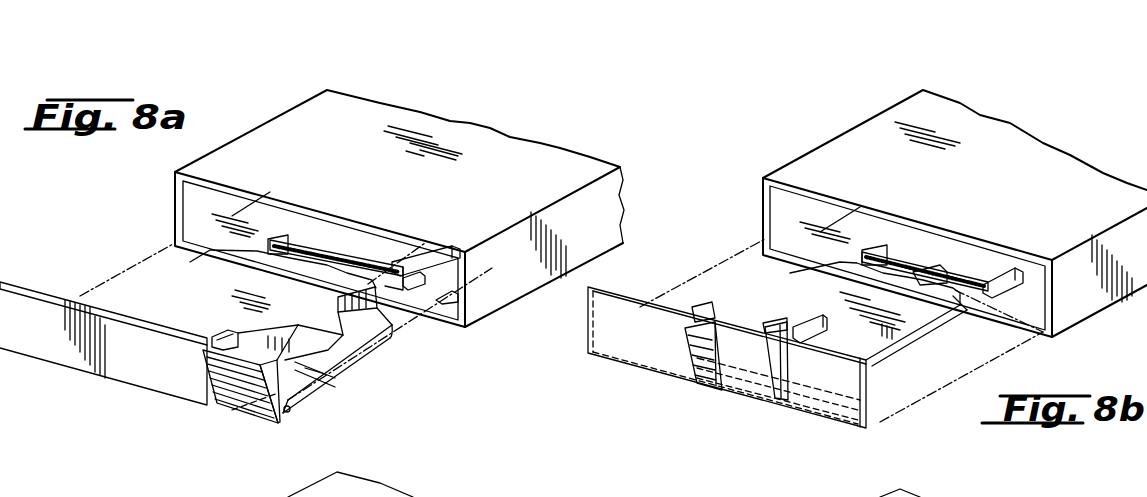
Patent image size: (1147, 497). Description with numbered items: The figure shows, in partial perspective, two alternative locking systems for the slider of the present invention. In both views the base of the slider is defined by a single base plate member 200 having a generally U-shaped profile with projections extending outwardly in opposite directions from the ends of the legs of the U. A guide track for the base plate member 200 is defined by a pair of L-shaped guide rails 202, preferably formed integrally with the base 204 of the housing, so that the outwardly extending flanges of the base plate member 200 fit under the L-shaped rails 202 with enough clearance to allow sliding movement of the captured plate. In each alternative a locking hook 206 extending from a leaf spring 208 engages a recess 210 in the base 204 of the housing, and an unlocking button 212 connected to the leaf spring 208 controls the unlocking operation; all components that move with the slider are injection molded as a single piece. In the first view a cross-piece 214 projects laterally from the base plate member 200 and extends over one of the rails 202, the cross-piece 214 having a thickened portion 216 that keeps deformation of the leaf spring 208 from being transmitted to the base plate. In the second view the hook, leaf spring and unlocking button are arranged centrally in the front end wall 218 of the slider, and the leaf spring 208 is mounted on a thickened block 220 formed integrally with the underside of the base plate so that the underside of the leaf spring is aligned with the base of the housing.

In FIG. 8A, the base plate member 200 is at (360, 250).
In FIG. 8B, the base plate member 200 is at (914, 240).
In FIG. 8A, the L-shaped guide rails 202 is at (277, 241).
In FIG. 8B, the L-shaped guide rails 202 is at (1005, 268).
In FIG. 8A, the base of the housing 204 is at (210, 236).
In FIG. 8B, the base of the housing 204 is at (795, 242).
In FIG. 8A, the locking hook 206 is at (292, 411).
In FIG. 8B, the locking hook 206 is at (776, 398).
In FIG. 8A, the leaf spring 208 is at (328, 365).
In FIG. 8B, the leaf spring 208 is at (731, 392).
In FIG. 8A, the recess 210 is at (448, 298).
In FIG. 8B, the recess 210 is at (944, 266).
In FIG. 8A, the unlocking button 212 is at (240, 385).
In FIG. 8B, the unlocking button 212 is at (690, 340).
In FIG. 8A, the cross-piece 214 is at (335, 324).
In FIG. 8A, the thickened portion 216 is at (392, 335).
In FIG. 8A, the front end wall 218 is at (47, 342).
In FIG. 8B, the front end wall 218 is at (625, 338).
In FIG. 8B, the thickened block 220 is at (800, 320).